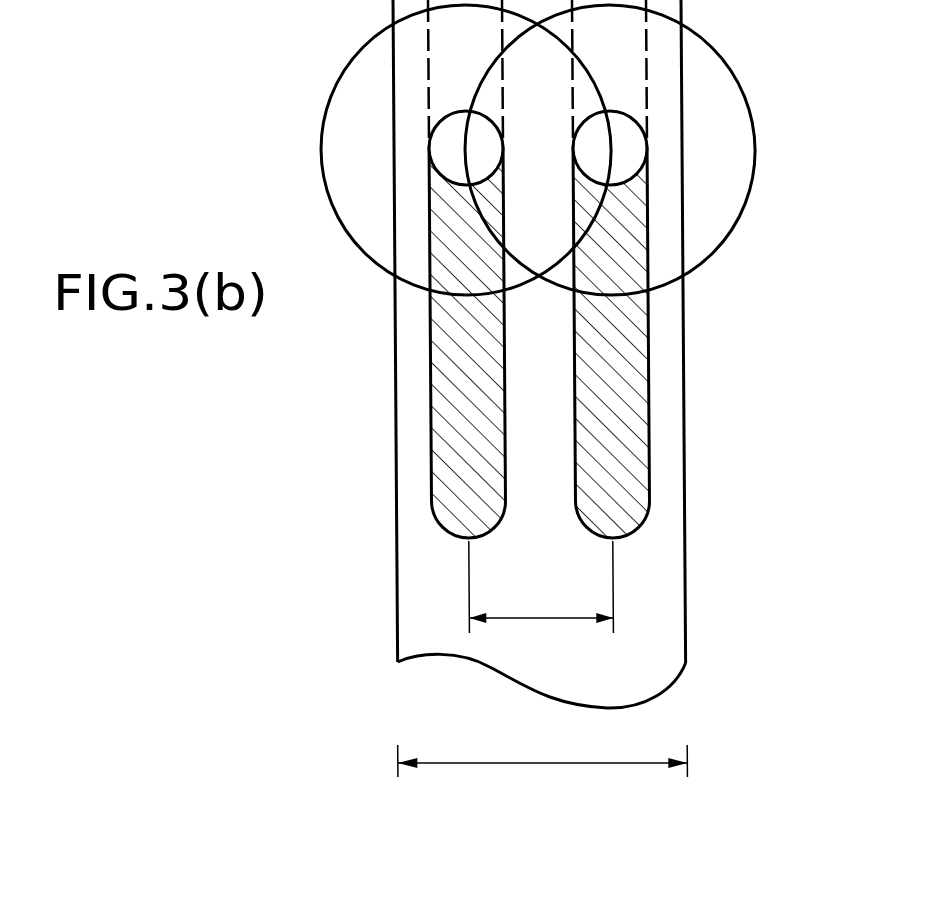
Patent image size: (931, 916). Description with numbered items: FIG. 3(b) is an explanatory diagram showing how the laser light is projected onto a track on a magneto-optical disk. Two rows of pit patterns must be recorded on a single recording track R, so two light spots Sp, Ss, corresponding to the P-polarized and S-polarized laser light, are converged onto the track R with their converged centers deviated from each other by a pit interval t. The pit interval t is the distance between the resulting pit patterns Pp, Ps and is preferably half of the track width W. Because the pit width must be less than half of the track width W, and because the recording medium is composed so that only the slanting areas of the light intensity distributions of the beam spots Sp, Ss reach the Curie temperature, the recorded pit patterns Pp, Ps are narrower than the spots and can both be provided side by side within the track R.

The recording track R is at (681, 350).
The pit pattern Pp is at (430, 476).
The pit pattern Ps is at (637, 462).
The light spot Sp is at (321, 118).
The light spot Ss is at (742, 90).
The pit interval t is at (541, 587).
The track width W is at (542, 745).